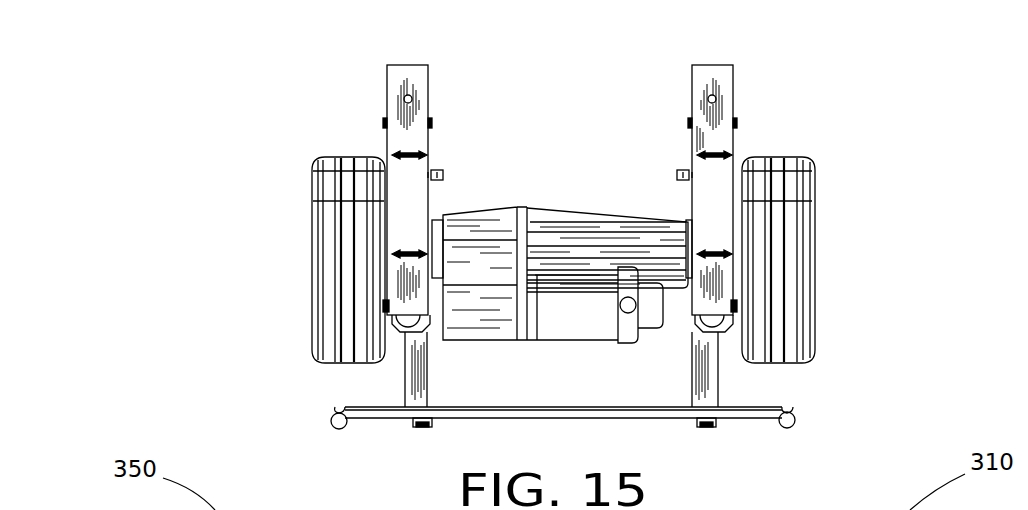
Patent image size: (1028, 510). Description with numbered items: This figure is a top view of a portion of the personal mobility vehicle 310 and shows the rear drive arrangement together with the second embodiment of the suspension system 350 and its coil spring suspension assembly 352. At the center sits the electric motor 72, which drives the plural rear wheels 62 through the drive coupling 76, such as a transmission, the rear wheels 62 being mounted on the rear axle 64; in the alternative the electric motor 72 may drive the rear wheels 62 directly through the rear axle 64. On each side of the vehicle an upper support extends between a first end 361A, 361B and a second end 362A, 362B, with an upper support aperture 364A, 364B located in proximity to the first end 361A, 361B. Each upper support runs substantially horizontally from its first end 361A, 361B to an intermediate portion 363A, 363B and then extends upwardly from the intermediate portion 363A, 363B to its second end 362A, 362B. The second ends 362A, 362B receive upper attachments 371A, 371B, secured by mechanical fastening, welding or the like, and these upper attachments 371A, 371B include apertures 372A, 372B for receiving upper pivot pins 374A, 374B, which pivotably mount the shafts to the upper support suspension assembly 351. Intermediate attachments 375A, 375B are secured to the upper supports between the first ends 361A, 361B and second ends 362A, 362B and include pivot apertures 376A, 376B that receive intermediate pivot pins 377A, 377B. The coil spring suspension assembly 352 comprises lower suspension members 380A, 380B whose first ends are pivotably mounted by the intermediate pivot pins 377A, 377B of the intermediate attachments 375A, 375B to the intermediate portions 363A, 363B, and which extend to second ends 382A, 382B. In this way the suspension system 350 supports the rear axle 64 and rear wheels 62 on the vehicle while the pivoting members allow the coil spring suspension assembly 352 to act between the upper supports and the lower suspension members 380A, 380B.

The suspension system 350 is at (212, 142).
The personal mobility vehicle 310 is at (910, 138).
The first end of upper support 361B is at (395, 72).
The first end of upper support 361A is at (725, 70).
The upper support aperture 364B is at (413, 100).
The upper support aperture 364A is at (707, 100).
The intermediate portion of upper support 363B is at (402, 138).
The intermediate portion of upper support 363A is at (720, 134).
The upper support suspension assembly 351 is at (728, 103).
The intermediate pivot pin 377B is at (443, 175).
The intermediate pivot pin 377A is at (677, 175).
The intermediate attachment 375B is at (304, 172).
The intermediate attachment 375A is at (820, 168).
The pivot aperture 376B is at (300, 202).
The pivot aperture 376A is at (820, 197).
The rear wheel 62 is at (313, 247).
The second end of upper support 362B is at (393, 278).
The second end of upper support 362A is at (728, 272).
The upper attachment 371B is at (395, 300).
The upper attachment 371A is at (728, 287).
The upper pivot pin 374B is at (392, 320).
The upper pivot pin 374A is at (733, 320).
The aperture of upper attachment 372B is at (397, 331).
The aperture of upper attachment 372A is at (735, 328).
The lower suspension member 380B is at (402, 325).
The lower suspension member 380A is at (725, 325).
The second end of lower suspension member 382B is at (412, 333).
The second end of lower suspension member 382A is at (723, 330).
The drive coupling 76 is at (490, 230).
The rear axle 64 is at (624, 250).
The electric motor 72 is at (570, 313).
The coil spring suspension assembly 352 is at (700, 325).